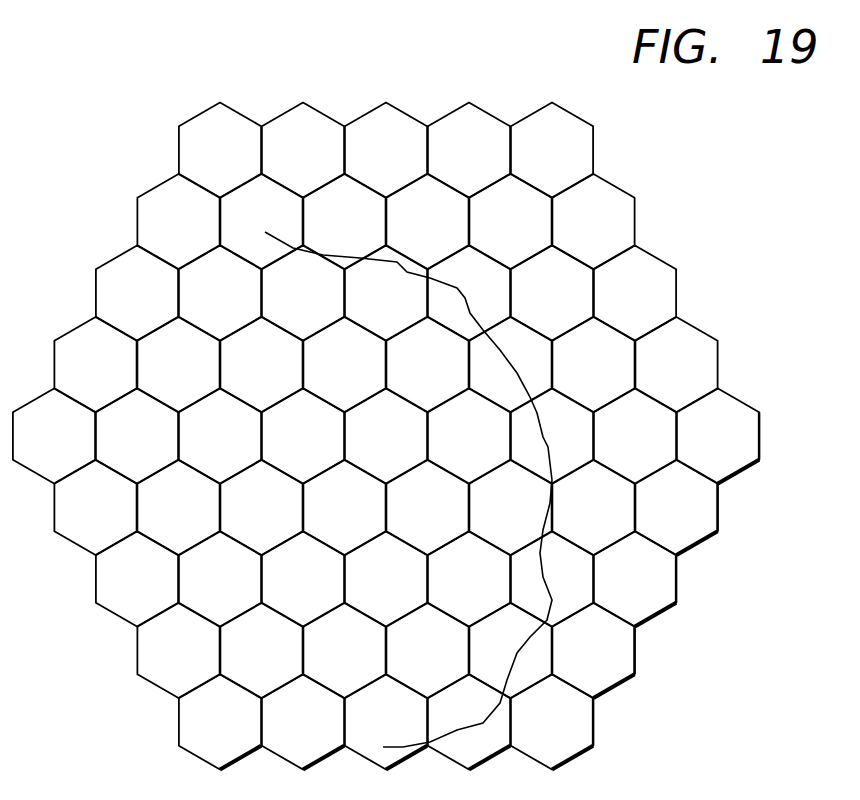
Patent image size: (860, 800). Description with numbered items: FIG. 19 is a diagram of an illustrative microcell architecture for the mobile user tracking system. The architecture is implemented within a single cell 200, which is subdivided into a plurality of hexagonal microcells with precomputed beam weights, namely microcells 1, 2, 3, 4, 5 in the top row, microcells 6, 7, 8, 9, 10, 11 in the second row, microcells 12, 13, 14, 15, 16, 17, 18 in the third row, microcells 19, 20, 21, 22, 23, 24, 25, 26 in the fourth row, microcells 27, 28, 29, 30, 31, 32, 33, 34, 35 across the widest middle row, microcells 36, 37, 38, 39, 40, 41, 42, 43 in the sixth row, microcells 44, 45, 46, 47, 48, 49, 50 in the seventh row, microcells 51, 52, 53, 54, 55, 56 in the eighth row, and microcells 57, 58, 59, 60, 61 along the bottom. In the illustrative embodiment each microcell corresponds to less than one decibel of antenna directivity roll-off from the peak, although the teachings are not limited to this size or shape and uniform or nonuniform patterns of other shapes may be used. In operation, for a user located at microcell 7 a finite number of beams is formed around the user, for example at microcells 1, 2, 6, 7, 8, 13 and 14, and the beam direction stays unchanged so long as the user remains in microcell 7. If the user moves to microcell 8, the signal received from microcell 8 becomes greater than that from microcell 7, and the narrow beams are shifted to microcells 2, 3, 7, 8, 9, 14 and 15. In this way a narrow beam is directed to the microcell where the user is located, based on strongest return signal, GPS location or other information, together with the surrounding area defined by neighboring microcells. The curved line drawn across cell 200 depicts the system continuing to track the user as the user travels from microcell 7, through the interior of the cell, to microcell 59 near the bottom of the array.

The cell 200 is at (682, 236).
The microcell 1 is at (220, 150).
The microcell 2 is at (303, 150).
The microcell 3 is at (386, 150).
The microcell 4 is at (469, 150).
The microcell 5 is at (552, 150).
The microcell 6 is at (178, 221).
The microcell 7 is at (261, 221).
The microcell 8 is at (344, 221).
The microcell 9 is at (427, 221).
The microcell 10 is at (510, 221).
The microcell 11 is at (593, 221).
The microcell 12 is at (137, 293).
The microcell 13 is at (220, 293).
The microcell 14 is at (303, 293).
The microcell 15 is at (386, 293).
The microcell 16 is at (469, 293).
The microcell 17 is at (552, 293).
The microcell 18 is at (635, 293).
The microcell 19 is at (95, 364).
The microcell 20 is at (178, 364).
The microcell 21 is at (261, 364).
The microcell 22 is at (344, 364).
The microcell 23 is at (427, 364).
The microcell 24 is at (510, 364).
The microcell 25 is at (593, 364).
The microcell 26 is at (676, 364).
The microcell 27 is at (54, 436).
The microcell 28 is at (137, 436).
The microcell 29 is at (220, 436).
The microcell 30 is at (303, 436).
The microcell 31 is at (386, 436).
The microcell 32 is at (469, 436).
The microcell 33 is at (552, 436).
The microcell 34 is at (635, 436).
The microcell 35 is at (718, 436).
The microcell 36 is at (95, 507).
The microcell 37 is at (178, 507).
The microcell 38 is at (261, 507).
The microcell 39 is at (344, 507).
The microcell 40 is at (427, 507).
The microcell 41 is at (510, 507).
The microcell 42 is at (593, 507).
The microcell 43 is at (676, 507).
The microcell 44 is at (137, 579).
The microcell 45 is at (220, 579).
The microcell 46 is at (303, 579).
The microcell 47 is at (386, 579).
The microcell 48 is at (469, 579).
The microcell 49 is at (552, 579).
The microcell 50 is at (635, 579).
The microcell 51 is at (178, 650).
The microcell 52 is at (261, 650).
The microcell 53 is at (344, 650).
The microcell 54 is at (427, 650).
The microcell 55 is at (510, 650).
The microcell 56 is at (593, 650).
The microcell 57 is at (220, 722).
The microcell 58 is at (303, 722).
The microcell 59 is at (386, 722).
The microcell 60 is at (469, 722).
The microcell 61 is at (552, 722).